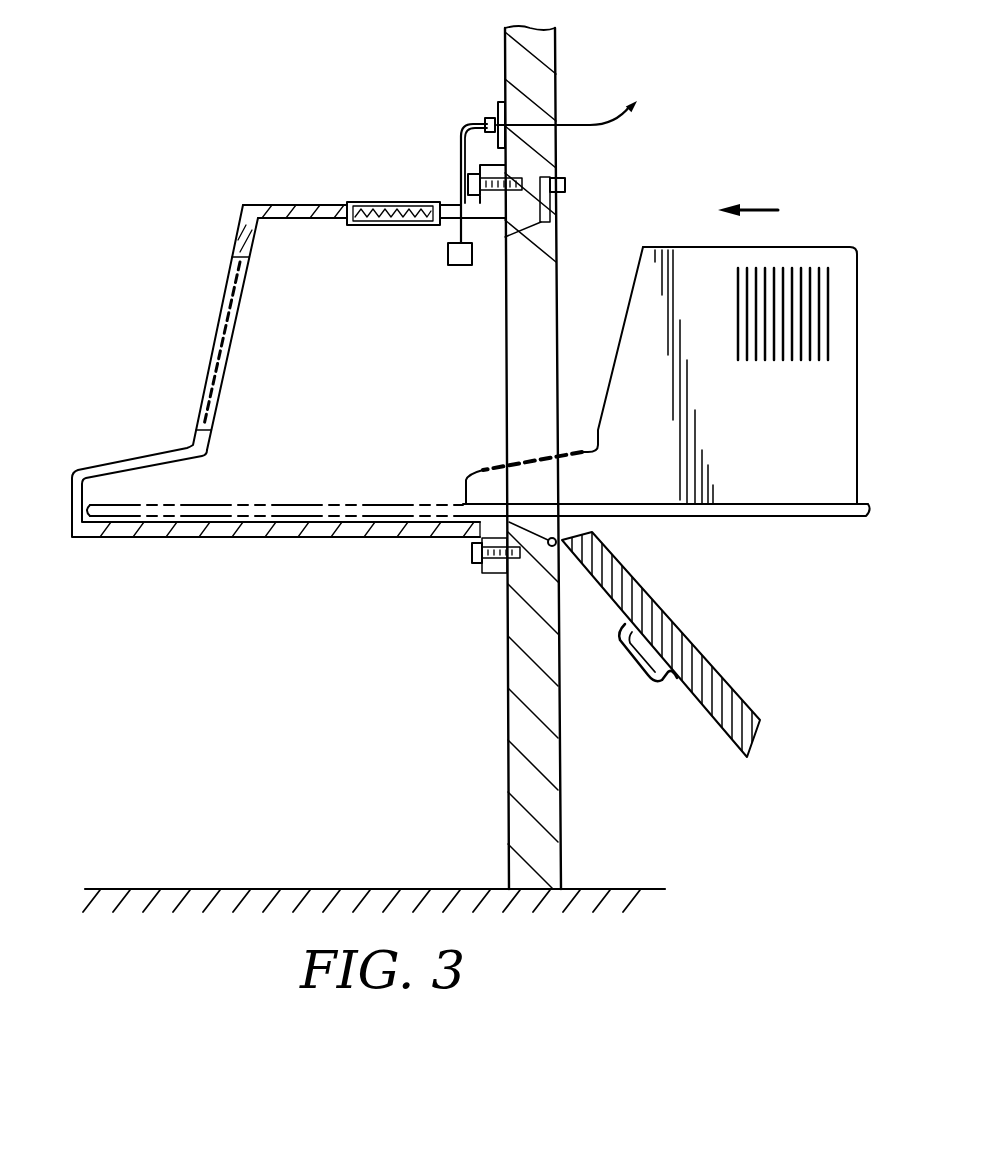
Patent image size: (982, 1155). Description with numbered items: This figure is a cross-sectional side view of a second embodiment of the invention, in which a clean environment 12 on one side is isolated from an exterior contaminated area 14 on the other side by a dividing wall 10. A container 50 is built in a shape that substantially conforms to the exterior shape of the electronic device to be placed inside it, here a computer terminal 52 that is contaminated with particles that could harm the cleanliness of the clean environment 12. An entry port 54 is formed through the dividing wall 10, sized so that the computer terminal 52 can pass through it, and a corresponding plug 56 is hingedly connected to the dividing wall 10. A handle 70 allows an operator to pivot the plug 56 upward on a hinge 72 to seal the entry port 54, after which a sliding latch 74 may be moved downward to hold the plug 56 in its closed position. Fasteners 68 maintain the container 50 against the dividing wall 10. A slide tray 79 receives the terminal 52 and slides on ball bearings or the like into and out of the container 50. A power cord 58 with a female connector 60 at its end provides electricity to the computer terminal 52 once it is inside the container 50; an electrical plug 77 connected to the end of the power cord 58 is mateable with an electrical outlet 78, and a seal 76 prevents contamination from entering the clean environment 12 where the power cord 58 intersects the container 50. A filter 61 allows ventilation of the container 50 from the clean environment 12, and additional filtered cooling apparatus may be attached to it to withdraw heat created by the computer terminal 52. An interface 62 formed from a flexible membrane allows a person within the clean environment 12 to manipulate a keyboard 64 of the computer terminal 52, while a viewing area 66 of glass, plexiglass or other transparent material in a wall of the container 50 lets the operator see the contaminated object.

The dividing wall 10 is at (557, 70).
The clean environment 12 is at (253, 85).
The exterior contaminated area 14 is at (733, 84).
The container 50 is at (196, 250).
The computer terminal 52 is at (794, 448).
The entry port 54 is at (566, 262).
The plug 56 is at (682, 628).
The power cord 58 is at (459, 150).
The female connector 60 is at (458, 266).
The filter 61 is at (362, 203).
The interface 62 is at (150, 452).
The keyboard 64 is at (490, 466).
The viewing area 66 is at (218, 350).
The fasteners 68 is at (525, 182).
The handle 70 is at (636, 663).
The hinge 72 is at (552, 538).
The sliding latch 74 is at (566, 185).
The seal 76 is at (468, 203).
The electrical plug 77 is at (485, 124).
The electrical outlet 78 is at (500, 102).
The slide tray 79 is at (785, 518).